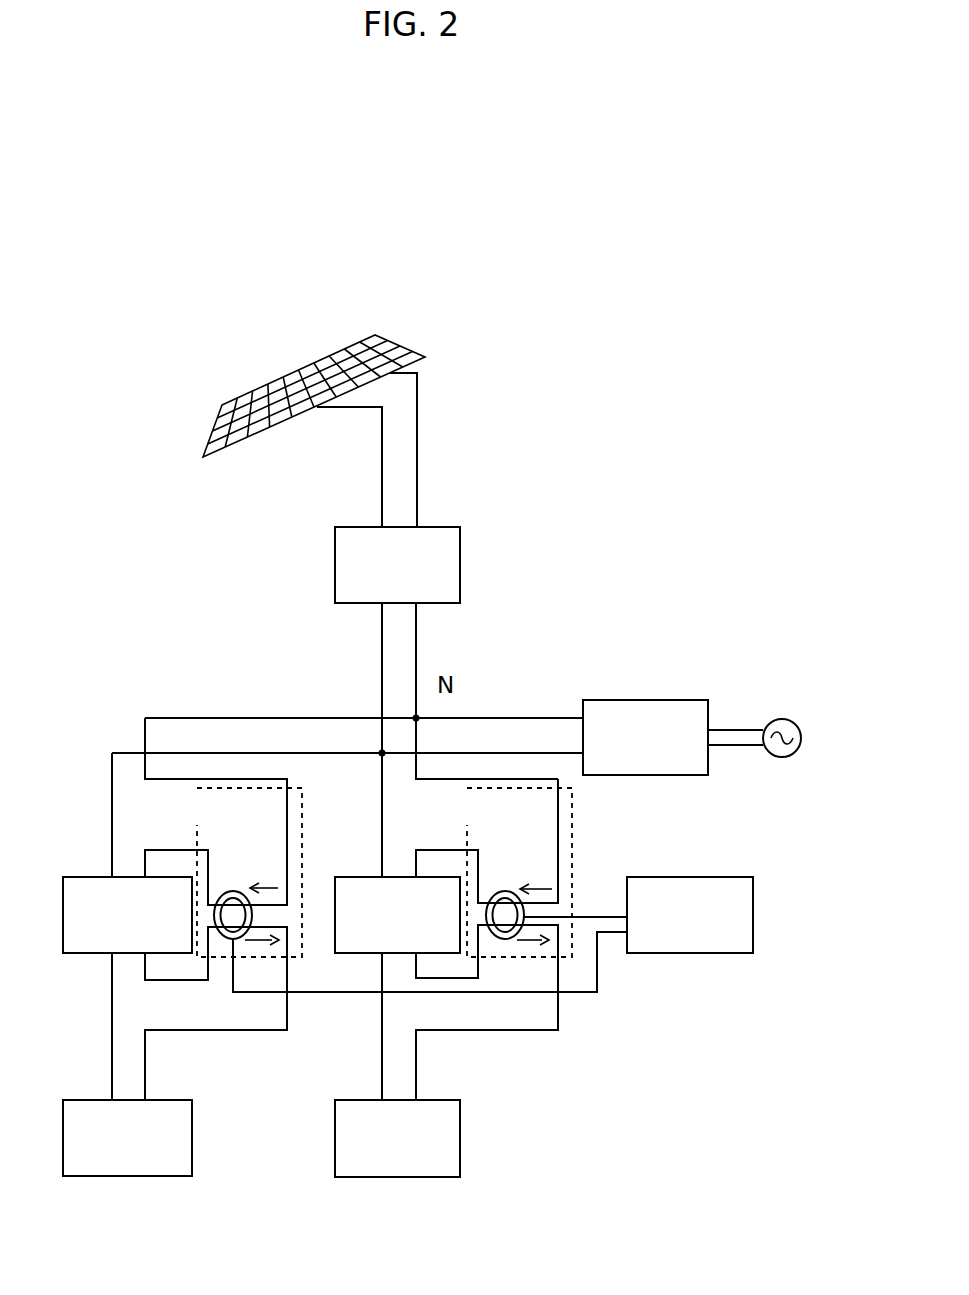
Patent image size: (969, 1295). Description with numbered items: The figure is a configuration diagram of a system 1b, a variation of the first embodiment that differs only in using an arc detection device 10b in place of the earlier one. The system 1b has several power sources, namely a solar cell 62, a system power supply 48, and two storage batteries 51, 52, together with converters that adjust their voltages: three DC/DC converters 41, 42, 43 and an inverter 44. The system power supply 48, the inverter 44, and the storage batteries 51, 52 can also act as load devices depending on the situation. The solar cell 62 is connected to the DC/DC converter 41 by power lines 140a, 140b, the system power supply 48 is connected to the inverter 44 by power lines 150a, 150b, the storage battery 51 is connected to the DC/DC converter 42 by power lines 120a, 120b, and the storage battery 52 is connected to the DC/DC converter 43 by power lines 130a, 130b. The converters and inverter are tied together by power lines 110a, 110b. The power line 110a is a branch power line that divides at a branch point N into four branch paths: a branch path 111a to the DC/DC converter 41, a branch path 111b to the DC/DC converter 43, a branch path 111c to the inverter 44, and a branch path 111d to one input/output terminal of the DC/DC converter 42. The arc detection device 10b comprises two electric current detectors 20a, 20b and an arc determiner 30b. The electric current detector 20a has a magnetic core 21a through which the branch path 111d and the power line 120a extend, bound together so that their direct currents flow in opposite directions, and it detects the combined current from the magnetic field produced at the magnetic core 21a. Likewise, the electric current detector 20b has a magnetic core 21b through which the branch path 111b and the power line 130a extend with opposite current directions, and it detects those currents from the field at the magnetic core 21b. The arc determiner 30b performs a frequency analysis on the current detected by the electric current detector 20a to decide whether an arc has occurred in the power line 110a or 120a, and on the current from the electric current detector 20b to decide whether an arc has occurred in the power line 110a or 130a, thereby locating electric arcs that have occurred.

The system 1b is at (683, 325).
The solar cell 62 is at (390, 342).
The power line 140a is at (417, 466).
The power line 140b is at (382, 466).
The DC/DC converter 41 is at (460, 553).
The power line 110a is at (555, 606).
The power line 110b is at (379, 653).
The branch path 111a is at (418, 655).
The branch path 111b is at (343, 718).
The branch path 111c is at (417, 718).
The branch path 111d is at (417, 745).
The inverter 44 is at (655, 700).
The power line 150a is at (745, 730).
The power line 150b is at (733, 747).
The system power supply 48 is at (790, 719).
The arc detection device 10b is at (792, 792).
The electric current detector 20a is at (572, 840).
The electric current detector 20b is at (302, 798).
The magnetic core 21a is at (497, 897).
The magnetic core 21b is at (227, 897).
The arc determiner 30b is at (717, 877).
The DC/DC converter 42 is at (365, 877).
The DC/DC converter 43 is at (92, 877).
The power line 120a is at (438, 980).
The power line 120b is at (381, 984).
The power line 130a is at (168, 982).
The power line 130b is at (112, 982).
The storage battery 51 is at (365, 1100).
The storage battery 52 is at (92, 1100).